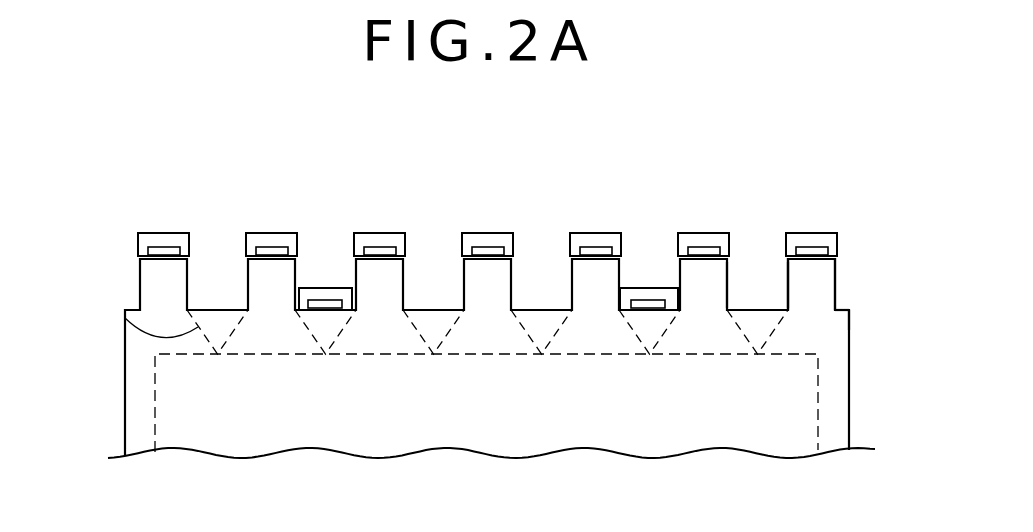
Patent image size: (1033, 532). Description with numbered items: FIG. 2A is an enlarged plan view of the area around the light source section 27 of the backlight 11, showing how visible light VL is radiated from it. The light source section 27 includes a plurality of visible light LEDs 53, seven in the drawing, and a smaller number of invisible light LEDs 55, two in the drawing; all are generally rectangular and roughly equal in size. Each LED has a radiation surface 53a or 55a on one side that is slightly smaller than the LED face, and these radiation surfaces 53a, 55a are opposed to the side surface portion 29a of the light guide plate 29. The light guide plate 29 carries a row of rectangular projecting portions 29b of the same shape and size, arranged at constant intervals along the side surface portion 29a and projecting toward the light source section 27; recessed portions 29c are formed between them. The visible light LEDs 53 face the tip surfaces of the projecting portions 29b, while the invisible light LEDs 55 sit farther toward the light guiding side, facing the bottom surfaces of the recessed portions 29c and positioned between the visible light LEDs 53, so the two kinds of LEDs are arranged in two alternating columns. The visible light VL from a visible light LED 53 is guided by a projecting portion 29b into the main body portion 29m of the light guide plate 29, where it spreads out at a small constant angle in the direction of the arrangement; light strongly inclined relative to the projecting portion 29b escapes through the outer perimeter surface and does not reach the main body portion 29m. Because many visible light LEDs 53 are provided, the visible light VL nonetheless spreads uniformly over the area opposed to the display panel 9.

The backlight 11 is at (762, 148).
The light source section 27 is at (824, 221).
The light guide plate 29 is at (830, 368).
The side surface portion 29a is at (853, 305).
The projecting portions 29b is at (790, 273).
The recessed portions 29c is at (645, 302).
The main body portion 29m is at (838, 321).
The display panel 9 is at (457, 354).
The visible light LEDs 53 is at (257, 242).
The radiation surfaces 53a is at (165, 252).
The invisible light LEDs 55 is at (326, 288).
The radiation surfaces 55a is at (328, 306).
The visible light VL is at (139, 317).